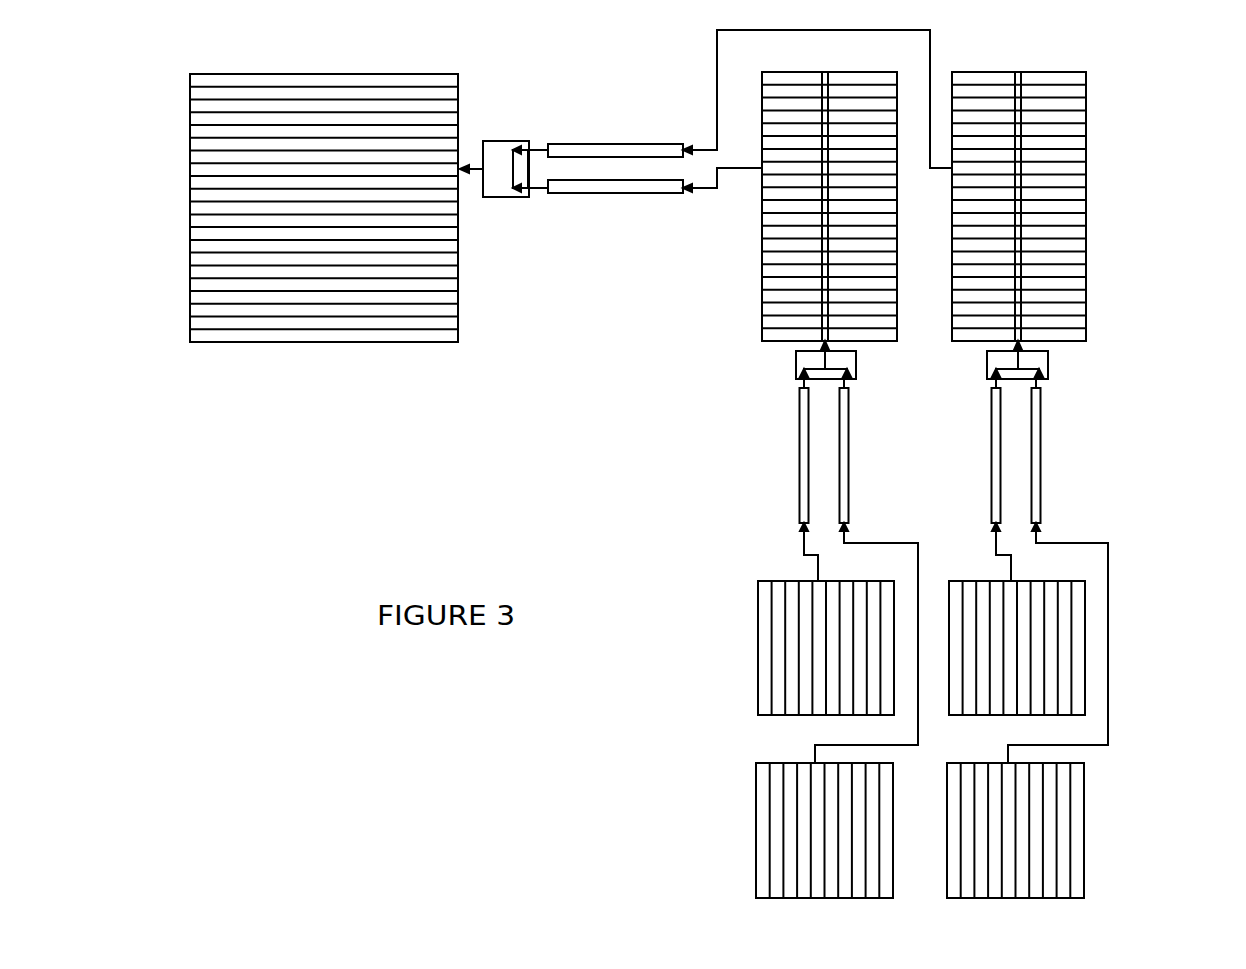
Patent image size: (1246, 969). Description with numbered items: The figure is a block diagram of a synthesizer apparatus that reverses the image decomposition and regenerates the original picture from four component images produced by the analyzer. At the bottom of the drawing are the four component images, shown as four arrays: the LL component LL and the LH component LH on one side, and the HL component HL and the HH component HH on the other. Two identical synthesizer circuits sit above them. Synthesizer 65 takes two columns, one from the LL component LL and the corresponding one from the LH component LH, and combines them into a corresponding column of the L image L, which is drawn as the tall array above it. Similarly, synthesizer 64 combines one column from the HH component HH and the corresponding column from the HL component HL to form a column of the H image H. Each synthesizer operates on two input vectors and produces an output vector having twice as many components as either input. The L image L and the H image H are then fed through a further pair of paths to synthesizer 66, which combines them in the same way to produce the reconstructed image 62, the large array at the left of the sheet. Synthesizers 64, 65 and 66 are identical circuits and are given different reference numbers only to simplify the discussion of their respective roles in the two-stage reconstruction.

The reconstructed image 62 is at (223, 322).
The synthesizer 66 is at (497, 190).
The synthesizer 64 is at (852, 373).
The synthesizer 65 is at (1046, 367).
The L image L is at (783, 333).
The H image H is at (1072, 329).
The LL component LL is at (773, 650).
The HL component HL is at (1057, 640).
The LH component LH is at (768, 818).
The HH component HH is at (1073, 805).